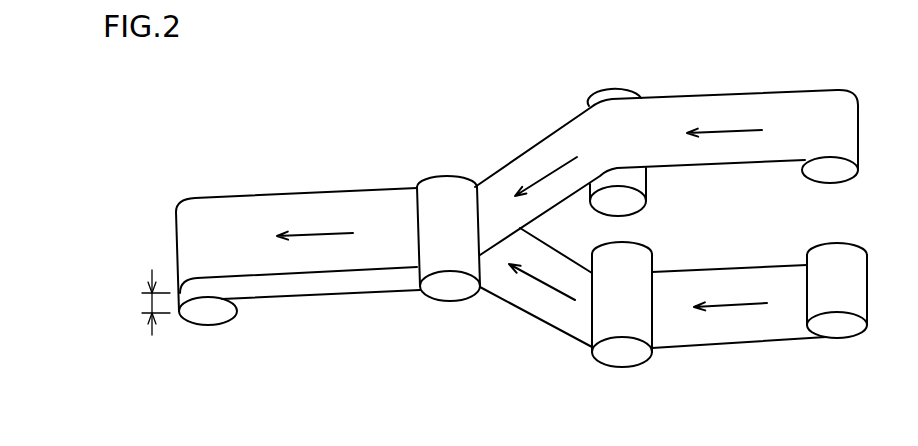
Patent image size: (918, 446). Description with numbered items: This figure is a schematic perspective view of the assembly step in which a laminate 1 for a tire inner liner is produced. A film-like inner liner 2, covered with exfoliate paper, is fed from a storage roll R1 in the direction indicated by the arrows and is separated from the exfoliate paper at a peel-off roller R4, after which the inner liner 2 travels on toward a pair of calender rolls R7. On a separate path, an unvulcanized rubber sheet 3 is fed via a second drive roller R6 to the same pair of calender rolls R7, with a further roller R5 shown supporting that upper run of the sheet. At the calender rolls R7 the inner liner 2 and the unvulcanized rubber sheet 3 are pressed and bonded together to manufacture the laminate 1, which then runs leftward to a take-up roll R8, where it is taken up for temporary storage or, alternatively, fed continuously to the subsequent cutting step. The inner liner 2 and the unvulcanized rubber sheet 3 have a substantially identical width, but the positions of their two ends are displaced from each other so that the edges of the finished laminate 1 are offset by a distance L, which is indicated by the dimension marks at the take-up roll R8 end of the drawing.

The laminate 1 is at (272, 163).
The inner liner 2 is at (325, 290).
The unvulcanized rubber sheet 3 is at (323, 200).
The storage roll R1 is at (840, 335).
The peel-off roller R4 is at (625, 363).
The roller R5 is at (837, 177).
The second drive roller R6 is at (618, 88).
The calender rolls R7 is at (445, 176).
The take-up roll R8 is at (210, 320).
The distance L is at (147, 302).